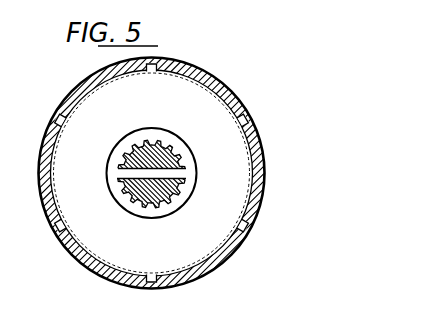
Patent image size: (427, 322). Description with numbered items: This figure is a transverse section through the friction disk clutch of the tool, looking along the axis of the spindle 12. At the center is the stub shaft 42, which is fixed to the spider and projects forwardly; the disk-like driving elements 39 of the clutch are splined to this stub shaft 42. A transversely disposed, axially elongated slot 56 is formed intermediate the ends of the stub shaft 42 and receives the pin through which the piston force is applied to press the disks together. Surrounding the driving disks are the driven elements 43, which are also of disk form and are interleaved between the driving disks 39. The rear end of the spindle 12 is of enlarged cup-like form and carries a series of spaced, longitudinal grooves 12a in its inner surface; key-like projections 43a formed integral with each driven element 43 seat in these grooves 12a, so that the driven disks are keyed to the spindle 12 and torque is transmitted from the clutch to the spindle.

The spindle 12 is at (41, 146).
The longitudinal grooves 12a is at (57, 119).
The driving elements 39 is at (163, 214).
The stub shaft 42 is at (147, 147).
The driven elements 43 is at (62, 173).
The key-like projections 43a is at (58, 229).
The slot 56 is at (176, 173).